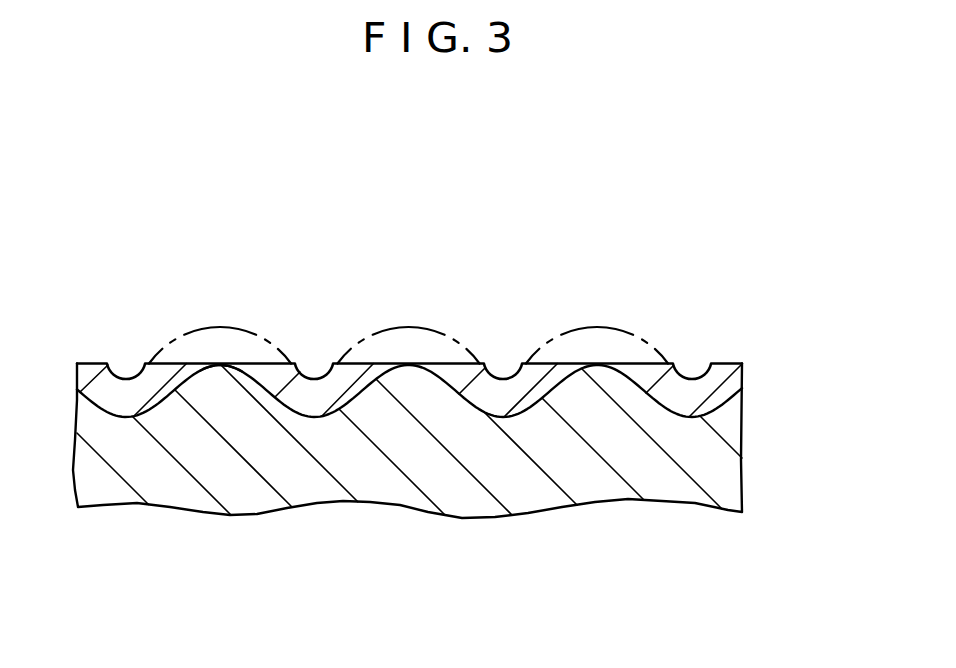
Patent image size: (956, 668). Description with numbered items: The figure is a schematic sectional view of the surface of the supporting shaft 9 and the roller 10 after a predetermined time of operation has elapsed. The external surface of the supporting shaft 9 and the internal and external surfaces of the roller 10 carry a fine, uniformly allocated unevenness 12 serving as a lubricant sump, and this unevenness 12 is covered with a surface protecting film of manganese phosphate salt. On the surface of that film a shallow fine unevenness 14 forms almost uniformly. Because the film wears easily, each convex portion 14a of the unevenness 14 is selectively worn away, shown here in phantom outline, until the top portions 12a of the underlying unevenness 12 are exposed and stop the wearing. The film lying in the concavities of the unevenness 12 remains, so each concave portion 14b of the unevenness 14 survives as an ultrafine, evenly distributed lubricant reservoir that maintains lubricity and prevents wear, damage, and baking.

The supporting shaft 9 is at (464, 441).
The roller 10 is at (713, 446).
The unevenness 12 is at (157, 403).
The top portion of the unevenness 12a is at (219, 366).
The shallow fine unevenness 14 is at (409, 295).
The convex portion of the unevenness 14a is at (293, 232).
The concave portion of the unevenness 14b is at (313, 378).